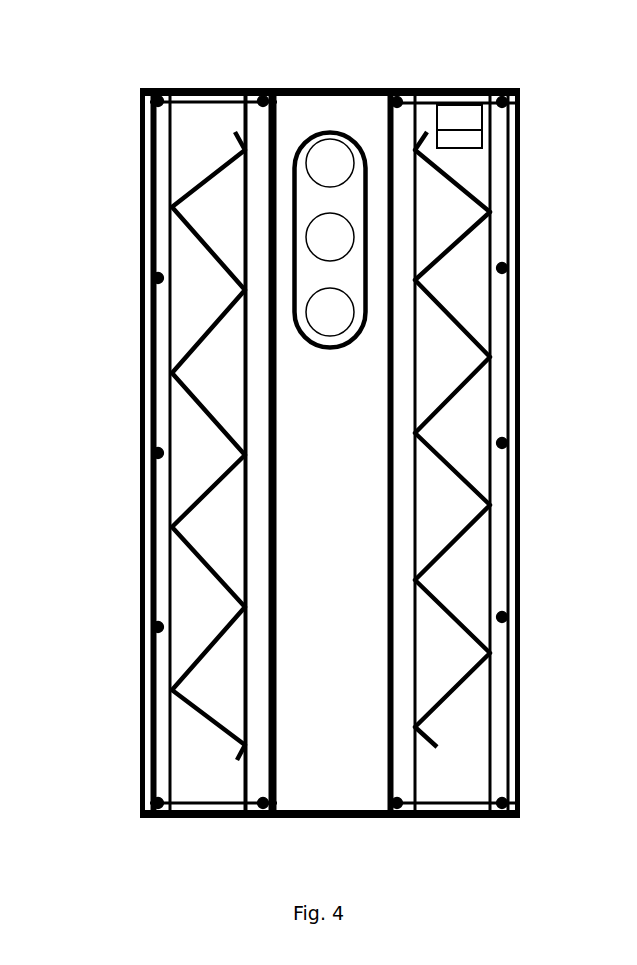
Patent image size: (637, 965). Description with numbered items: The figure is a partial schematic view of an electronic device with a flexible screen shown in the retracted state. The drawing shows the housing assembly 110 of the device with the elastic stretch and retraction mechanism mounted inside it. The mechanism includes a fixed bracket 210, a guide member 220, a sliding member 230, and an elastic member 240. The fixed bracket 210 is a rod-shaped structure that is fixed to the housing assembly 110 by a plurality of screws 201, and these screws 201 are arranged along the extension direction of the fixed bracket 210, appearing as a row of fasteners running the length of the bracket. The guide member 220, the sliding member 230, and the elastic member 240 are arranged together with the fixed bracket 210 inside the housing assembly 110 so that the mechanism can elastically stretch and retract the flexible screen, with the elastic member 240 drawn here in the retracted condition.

The housing assembly 110 is at (313, 115).
The screws 201 is at (155, 100).
The fixed bracket 210 is at (160, 672).
The guide member 220 is at (215, 800).
The sliding member 230 is at (257, 297).
The elastic member 240 is at (225, 462).